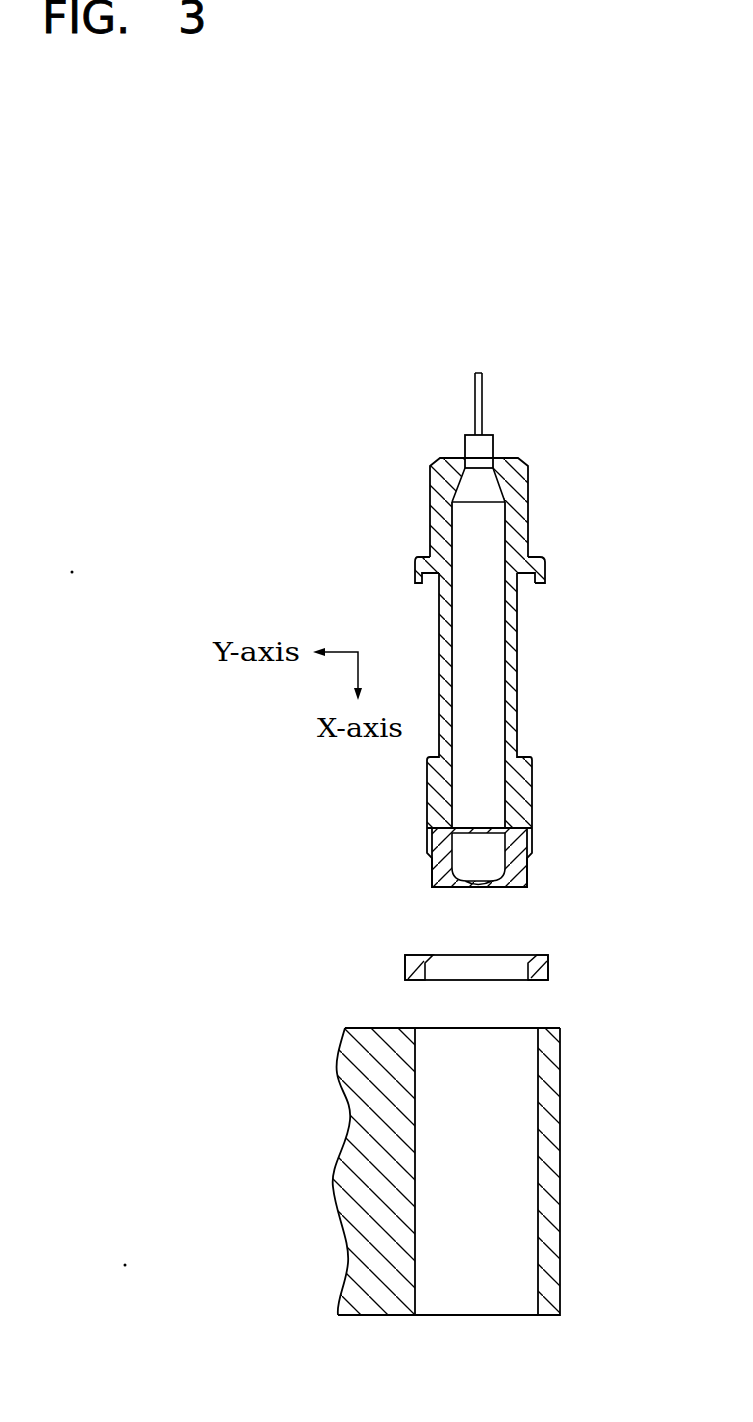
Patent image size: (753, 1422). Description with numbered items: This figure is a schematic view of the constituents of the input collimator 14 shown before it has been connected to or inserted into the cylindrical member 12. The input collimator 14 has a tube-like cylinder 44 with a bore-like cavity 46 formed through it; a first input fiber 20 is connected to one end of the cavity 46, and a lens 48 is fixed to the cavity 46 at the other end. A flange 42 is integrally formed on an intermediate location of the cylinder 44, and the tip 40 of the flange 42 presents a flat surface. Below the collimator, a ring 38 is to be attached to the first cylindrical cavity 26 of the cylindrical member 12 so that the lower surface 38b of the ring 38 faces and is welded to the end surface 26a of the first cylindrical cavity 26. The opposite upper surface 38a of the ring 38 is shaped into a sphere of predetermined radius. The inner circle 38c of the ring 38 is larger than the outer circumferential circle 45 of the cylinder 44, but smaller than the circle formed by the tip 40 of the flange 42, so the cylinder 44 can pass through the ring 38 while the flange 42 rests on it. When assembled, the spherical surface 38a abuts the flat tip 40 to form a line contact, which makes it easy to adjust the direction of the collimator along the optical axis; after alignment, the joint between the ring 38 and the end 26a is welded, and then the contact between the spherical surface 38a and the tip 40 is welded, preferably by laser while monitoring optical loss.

The exhaust pipe 12 is at (502, 1158).
The input collimator 14 is at (596, 457).
The first input fiber 20 is at (485, 392).
The first cylindrical cavity 26 is at (515, 1110).
The end surface of the first cylindrical cavity 26a is at (560, 1023).
The ring 38 is at (521, 934).
The spherical upper surface of the ring 38a is at (545, 950).
The lower surface of the ring 38b is at (540, 980).
The inner circle of the ring 38c is at (433, 955).
The tip of the flange 40 is at (543, 597).
The flange 42 is at (545, 562).
The cylinder 44 is at (522, 512).
The outer circumferential circle of the cylinder 45 is at (517, 663).
The cavity 46 is at (478, 697).
The lens 48 is at (497, 850).